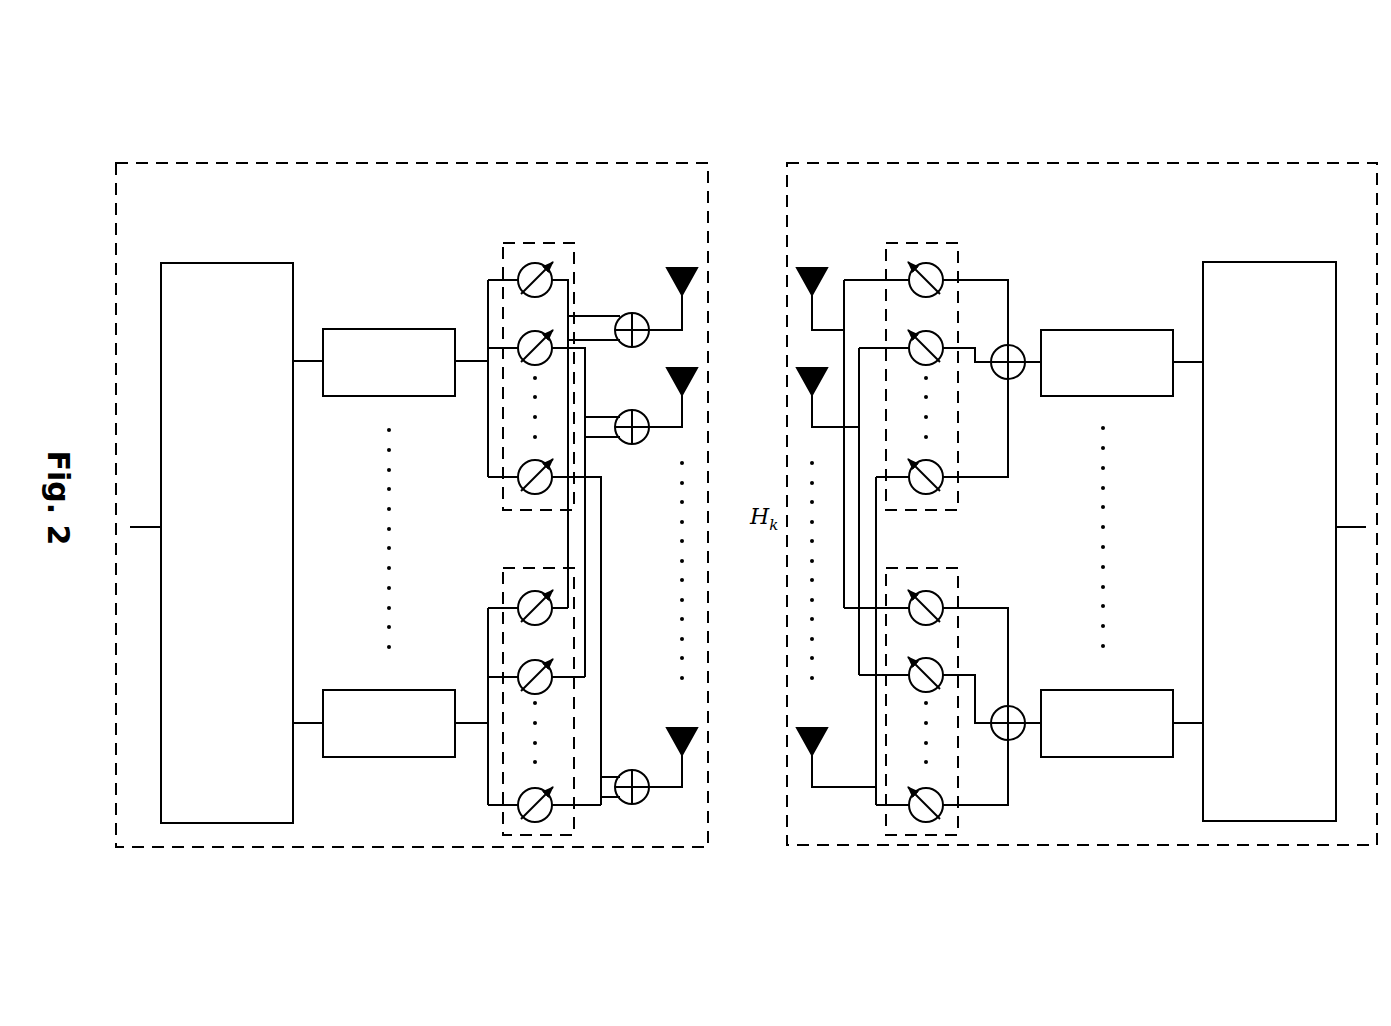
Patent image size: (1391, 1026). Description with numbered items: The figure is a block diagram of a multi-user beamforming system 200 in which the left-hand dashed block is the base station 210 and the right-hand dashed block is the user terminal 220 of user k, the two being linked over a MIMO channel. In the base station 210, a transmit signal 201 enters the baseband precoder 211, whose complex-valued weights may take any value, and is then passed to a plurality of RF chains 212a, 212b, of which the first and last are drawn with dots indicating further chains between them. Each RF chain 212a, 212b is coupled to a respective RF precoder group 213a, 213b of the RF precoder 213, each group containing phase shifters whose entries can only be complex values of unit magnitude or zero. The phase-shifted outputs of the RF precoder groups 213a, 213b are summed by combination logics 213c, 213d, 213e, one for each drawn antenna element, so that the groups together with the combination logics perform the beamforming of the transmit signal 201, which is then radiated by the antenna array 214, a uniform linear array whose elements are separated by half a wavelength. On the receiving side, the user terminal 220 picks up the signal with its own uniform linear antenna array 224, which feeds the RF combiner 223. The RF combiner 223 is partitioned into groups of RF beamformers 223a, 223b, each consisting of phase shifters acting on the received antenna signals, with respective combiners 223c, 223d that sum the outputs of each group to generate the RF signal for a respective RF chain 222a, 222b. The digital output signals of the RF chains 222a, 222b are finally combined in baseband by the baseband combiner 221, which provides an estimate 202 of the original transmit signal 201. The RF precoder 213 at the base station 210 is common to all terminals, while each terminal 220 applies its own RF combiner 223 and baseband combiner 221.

The multi-user beamforming system 200 is at (1250, 122).
The transmit signal 201 is at (142, 486).
The estimate of the transmit signal 202 is at (1358, 518).
The base station 210 is at (343, 162).
The baseband precoder 211 is at (212, 260).
The RF chain 212a is at (385, 328).
The RF chain 212b is at (407, 688).
The RF precoder 213 is at (597, 203).
The RF precoder group 213a is at (578, 267).
The RF precoder group 213b is at (578, 717).
The combination logic 213c is at (652, 338).
The combination logic 213d is at (644, 448).
The combination logic 213e is at (646, 807).
The antenna array 214 is at (684, 261).
The user terminal 220 is at (1130, 165).
The baseband combiner 221 is at (1259, 260).
The RF chain 222a is at (1104, 327).
The RF chain 222b is at (1122, 687).
The RF combiner 223 is at (960, 203).
The RF beamformer group 223a is at (964, 259).
The RF beamformer group 223b is at (936, 565).
The combiner 223c is at (1016, 344).
The combiner 223d is at (1016, 704).
The antenna array 224 is at (810, 261).